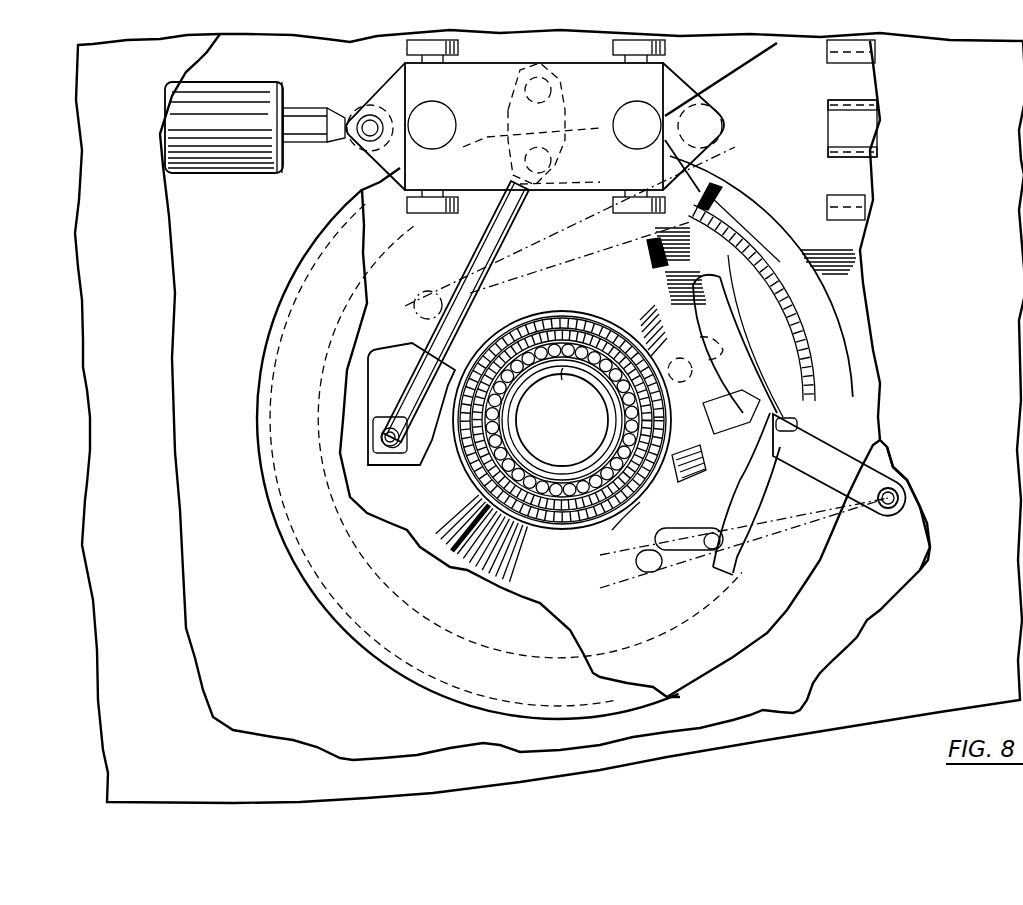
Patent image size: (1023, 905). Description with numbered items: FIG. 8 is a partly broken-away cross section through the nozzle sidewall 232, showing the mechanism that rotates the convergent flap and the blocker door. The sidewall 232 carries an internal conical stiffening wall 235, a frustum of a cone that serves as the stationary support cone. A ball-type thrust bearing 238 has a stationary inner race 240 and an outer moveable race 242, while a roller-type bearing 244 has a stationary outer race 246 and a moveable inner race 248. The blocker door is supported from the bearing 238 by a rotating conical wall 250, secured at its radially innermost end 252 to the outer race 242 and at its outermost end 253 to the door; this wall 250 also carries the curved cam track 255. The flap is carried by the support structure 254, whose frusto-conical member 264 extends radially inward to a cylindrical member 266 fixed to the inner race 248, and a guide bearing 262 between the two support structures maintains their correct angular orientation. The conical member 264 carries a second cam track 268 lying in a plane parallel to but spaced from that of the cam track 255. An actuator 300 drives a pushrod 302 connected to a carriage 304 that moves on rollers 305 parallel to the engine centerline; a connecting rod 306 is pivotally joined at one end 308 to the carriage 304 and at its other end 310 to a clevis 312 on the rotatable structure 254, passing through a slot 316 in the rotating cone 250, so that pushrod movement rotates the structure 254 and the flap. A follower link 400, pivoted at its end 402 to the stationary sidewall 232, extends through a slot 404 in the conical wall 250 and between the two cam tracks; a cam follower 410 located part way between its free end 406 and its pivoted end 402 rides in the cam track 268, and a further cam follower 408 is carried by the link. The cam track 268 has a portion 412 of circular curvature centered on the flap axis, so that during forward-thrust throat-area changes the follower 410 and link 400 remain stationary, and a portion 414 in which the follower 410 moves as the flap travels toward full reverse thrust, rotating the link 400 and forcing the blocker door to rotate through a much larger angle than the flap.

The sidewall 232 is at (918, 532).
The conical stiffening wall 235 is at (755, 58).
The thrust bearing 238 is at (564, 318).
The stationary inner race 240 is at (520, 336).
The outer moveable race 242 is at (507, 330).
The bearing 244 is at (576, 478).
The stationary outer race 246 is at (513, 432).
The moveable inner race 248 is at (518, 449).
The conical wall 250 is at (540, 555).
The radially innermost end 252 is at (612, 530).
The outermost end 253 is at (717, 666).
The support structure 254 is at (750, 243).
The cam track 255 is at (708, 352).
The guide bearing 262 is at (722, 196).
The frusto-conical member 264 is at (708, 222).
The cylindrical member 266 is at (566, 376).
The cam track 268 is at (724, 313).
The actuator 300 is at (234, 112).
The pushrod 302 is at (306, 112).
The carriage 304 is at (592, 62).
The rollers 305 is at (407, 48).
The connecting rod 306 is at (508, 50).
The end 308 is at (522, 85).
The other end 310 is at (412, 420).
The clevis 312 is at (381, 438).
The slot 316 is at (400, 356).
The follower link 400 is at (833, 468).
The end 402 is at (897, 490).
The slot 404 is at (798, 428).
The free end 406 is at (731, 408).
The cam follower 408 is at (678, 368).
The cam follower 410 is at (702, 463).
The cam track portion 412 is at (755, 330).
The cam track portion 414 is at (746, 494).